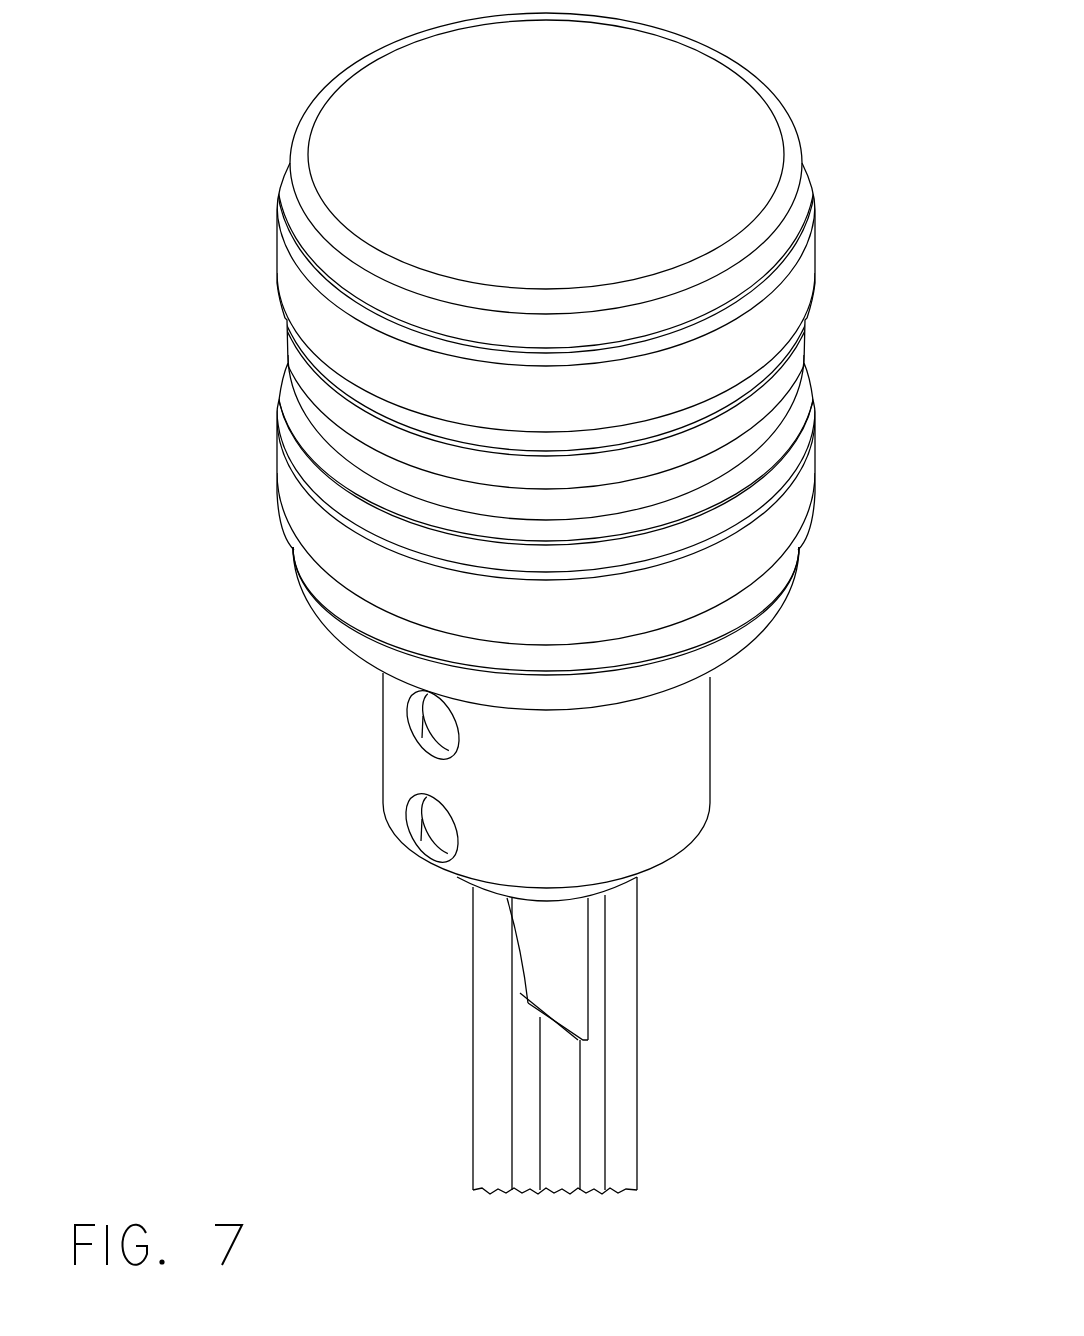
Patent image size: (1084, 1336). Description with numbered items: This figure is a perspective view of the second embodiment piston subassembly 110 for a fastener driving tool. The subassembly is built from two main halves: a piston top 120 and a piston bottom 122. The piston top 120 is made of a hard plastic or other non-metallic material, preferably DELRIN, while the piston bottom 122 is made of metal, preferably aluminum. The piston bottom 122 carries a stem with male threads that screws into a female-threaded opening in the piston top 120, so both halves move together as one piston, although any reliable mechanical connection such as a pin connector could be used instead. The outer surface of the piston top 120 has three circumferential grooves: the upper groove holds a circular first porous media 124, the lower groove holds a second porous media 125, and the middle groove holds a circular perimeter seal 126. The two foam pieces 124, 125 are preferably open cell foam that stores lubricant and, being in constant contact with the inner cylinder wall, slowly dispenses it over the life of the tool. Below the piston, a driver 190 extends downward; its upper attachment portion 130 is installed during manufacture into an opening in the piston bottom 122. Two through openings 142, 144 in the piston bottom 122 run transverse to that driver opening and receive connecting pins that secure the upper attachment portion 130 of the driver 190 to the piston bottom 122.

The piston subassembly 110 is at (260, 62).
The piston top 120 is at (678, 84).
The piston bottom 122 is at (677, 708).
The first porous media 124 is at (792, 297).
The second porous media 125 is at (803, 493).
The circular seal 126 is at (773, 427).
The upper attachment portion 130 is at (557, 957).
The through opening 142 is at (423, 720).
The through opening 144 is at (428, 830).
The driver 190 is at (620, 1123).